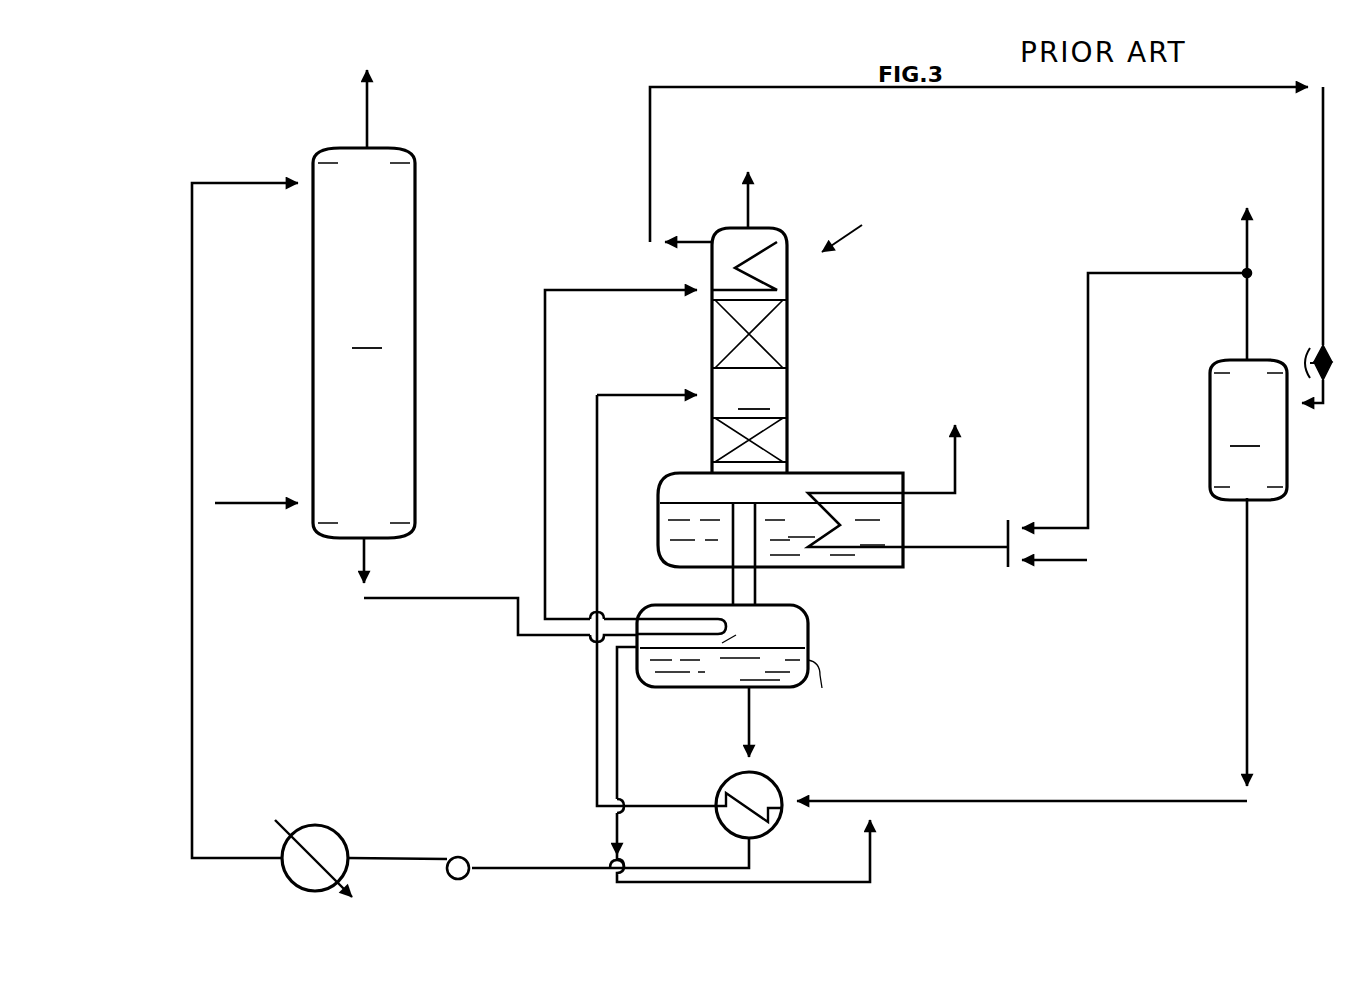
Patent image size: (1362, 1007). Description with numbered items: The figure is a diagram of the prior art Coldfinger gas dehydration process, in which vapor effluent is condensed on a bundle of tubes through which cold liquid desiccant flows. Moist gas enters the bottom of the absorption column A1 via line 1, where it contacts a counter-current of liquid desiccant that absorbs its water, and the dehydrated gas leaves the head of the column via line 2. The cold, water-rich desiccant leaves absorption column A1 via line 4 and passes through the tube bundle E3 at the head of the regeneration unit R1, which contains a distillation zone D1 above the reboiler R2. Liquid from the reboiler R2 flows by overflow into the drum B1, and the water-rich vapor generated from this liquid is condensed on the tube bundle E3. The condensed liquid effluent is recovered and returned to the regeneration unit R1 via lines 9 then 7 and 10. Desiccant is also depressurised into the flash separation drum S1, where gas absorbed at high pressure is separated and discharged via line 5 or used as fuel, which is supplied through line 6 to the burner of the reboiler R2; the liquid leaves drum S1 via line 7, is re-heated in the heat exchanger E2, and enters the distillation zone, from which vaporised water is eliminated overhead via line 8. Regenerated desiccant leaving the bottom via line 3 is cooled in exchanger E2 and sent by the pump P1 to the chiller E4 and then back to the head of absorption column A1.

The line 1 is at (254, 503).
The line 2 is at (367, 104).
The line 3 is at (192, 262).
The line 4 is at (872, 87).
The line 5 is at (1246, 242).
The gas line to reactor R2 6 is at (1138, 273).
The line 7 is at (1118, 801).
The line 8 is at (748, 190).
The line 9 is at (617, 714).
The line 10 is at (640, 395).
The absorption column A1 is at (364, 343).
The distillation column D1 is at (749, 350).
The regeneration unit R1 is at (855, 230).
The reboiler R2 is at (872, 515).
The drum B1 is at (739, 660).
The heat exchanger E2 is at (759, 812).
The tube bundle E3 is at (650, 466).
The chiller E4 is at (313, 847).
The flash separation drum S1 is at (1248, 430).
The pump P1 is at (460, 855).